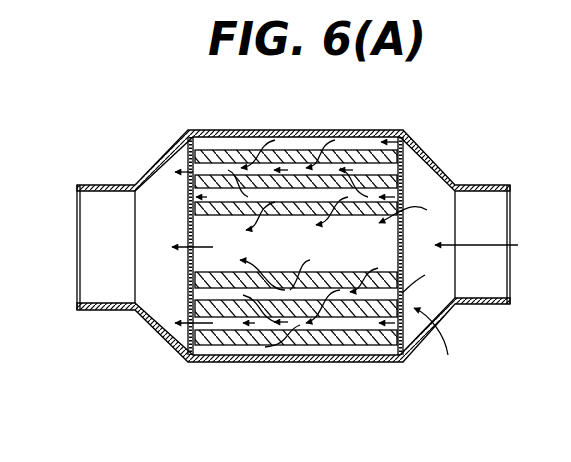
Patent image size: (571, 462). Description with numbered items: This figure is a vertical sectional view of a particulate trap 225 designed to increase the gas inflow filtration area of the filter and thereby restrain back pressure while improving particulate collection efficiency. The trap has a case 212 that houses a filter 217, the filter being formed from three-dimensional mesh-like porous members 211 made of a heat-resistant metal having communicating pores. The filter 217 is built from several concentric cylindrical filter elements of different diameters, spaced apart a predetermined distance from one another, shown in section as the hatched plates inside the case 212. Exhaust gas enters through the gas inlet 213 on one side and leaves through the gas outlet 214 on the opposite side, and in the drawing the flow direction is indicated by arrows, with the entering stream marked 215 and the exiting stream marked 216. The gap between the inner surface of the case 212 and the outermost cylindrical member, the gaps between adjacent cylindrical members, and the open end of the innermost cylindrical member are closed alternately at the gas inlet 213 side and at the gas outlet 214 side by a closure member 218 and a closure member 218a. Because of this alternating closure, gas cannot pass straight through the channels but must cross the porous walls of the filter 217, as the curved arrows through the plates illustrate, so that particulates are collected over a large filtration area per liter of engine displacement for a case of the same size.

The three-dimensional mesh-like porous member 211 is at (292, 345).
The case 212 is at (439, 154).
The gas inlet 213 is at (486, 284).
The gas outlet 214 is at (100, 290).
The exhaust gas inflow 215 is at (501, 246).
The exhaust gas outflow 216 is at (117, 248).
The filter 217 is at (402, 230).
The closure member 218 is at (402, 258).
The closure member 218a is at (187, 293).
The particulate trap 225 is at (423, 325).